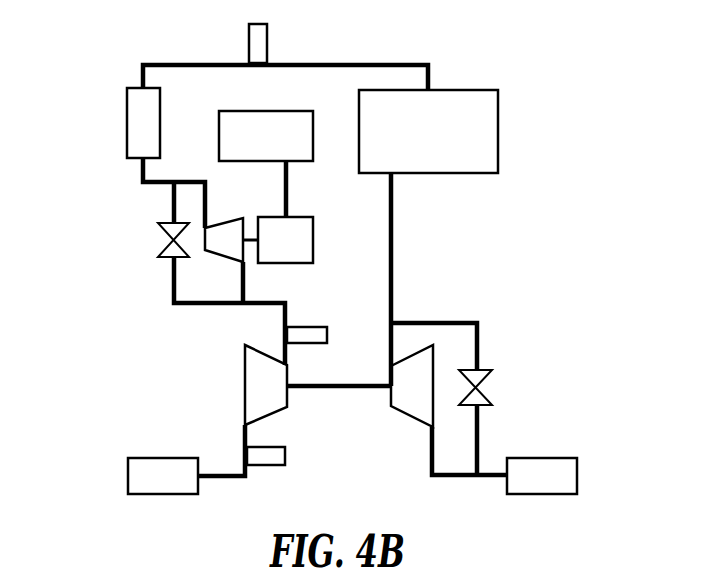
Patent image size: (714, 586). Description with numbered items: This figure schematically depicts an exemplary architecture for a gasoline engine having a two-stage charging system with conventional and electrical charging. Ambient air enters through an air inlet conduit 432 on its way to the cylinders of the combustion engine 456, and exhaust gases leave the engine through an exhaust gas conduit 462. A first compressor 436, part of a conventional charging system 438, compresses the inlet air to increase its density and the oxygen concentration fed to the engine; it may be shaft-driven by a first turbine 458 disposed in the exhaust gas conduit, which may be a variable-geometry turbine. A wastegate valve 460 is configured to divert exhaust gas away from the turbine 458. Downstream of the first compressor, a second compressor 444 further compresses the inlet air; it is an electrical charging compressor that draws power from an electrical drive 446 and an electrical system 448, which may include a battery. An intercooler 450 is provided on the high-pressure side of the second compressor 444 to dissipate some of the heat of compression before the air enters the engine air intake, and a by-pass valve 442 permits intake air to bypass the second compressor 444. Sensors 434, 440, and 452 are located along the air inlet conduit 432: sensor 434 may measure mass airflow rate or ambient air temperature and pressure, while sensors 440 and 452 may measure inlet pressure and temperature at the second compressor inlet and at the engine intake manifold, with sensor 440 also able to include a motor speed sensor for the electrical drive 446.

The air inlet conduit 432 is at (128, 465).
The sensor 434 is at (267, 465).
The first compressor 436 is at (243, 395).
The conventional charging system 438 is at (337, 390).
The sensor 440 is at (307, 327).
The by-pass valve 442 is at (165, 258).
The second compressor 444 is at (223, 257).
The electrical drive 446 is at (300, 217).
The electrical system 448 is at (258, 111).
The intercooler 450 is at (127, 125).
The sensor 452 is at (248, 45).
The combustion engine 456 is at (449, 90).
The first turbine 458 is at (412, 418).
The wastegate valve 460 is at (483, 370).
The exhaust gas conduit 462 is at (540, 458).